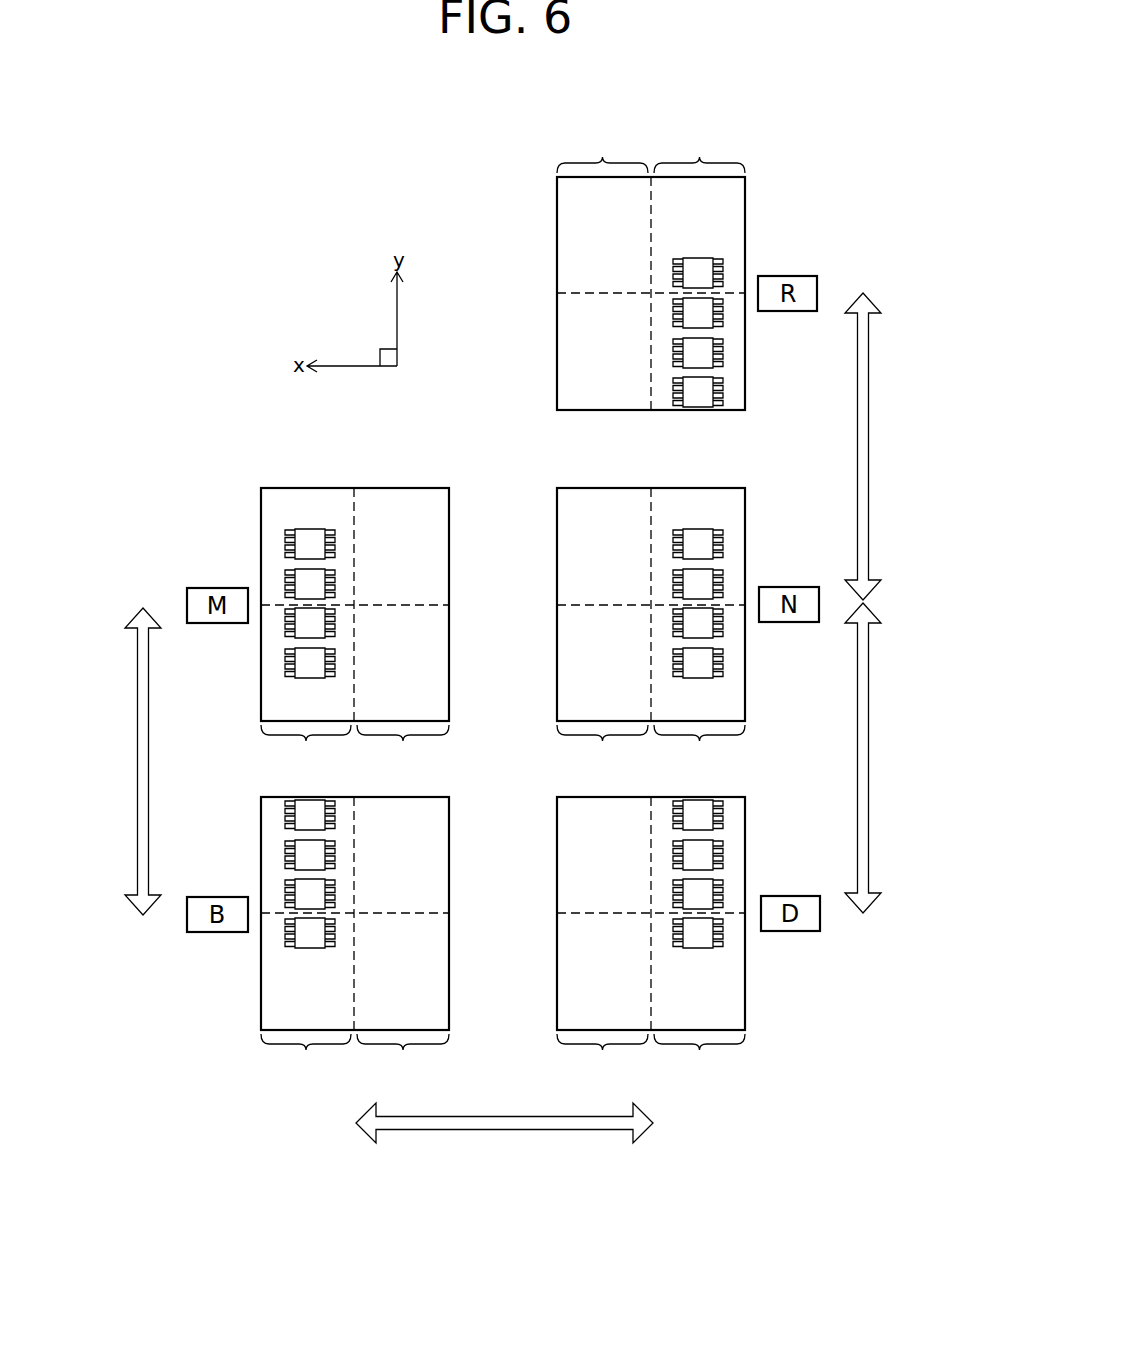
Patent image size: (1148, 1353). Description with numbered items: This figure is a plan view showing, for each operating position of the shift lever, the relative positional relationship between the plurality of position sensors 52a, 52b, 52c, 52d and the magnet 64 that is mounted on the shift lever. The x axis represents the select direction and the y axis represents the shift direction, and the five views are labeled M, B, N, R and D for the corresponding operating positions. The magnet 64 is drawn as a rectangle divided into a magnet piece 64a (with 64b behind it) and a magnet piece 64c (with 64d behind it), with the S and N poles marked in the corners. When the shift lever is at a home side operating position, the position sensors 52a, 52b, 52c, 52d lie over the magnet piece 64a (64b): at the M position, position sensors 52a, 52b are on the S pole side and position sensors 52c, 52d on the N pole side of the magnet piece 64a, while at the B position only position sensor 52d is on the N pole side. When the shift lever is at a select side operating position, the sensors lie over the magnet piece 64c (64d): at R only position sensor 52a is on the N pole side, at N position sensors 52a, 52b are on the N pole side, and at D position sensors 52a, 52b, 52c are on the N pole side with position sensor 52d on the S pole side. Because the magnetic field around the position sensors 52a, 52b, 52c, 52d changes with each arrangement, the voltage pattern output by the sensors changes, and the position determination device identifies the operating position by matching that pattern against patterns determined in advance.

The position sensor 52a is at (700, 273).
The position sensor 52b is at (700, 313).
The position sensor 52c is at (700, 353).
The position sensor 52d is at (700, 395).
The magnet 64 is at (547, 345).
The magnet piece 64a is at (448, 605).
The magnet piece 64b is at (448, 605).
The magnet piece 64c is at (558, 605).
The magnet piece 64d is at (558, 605).